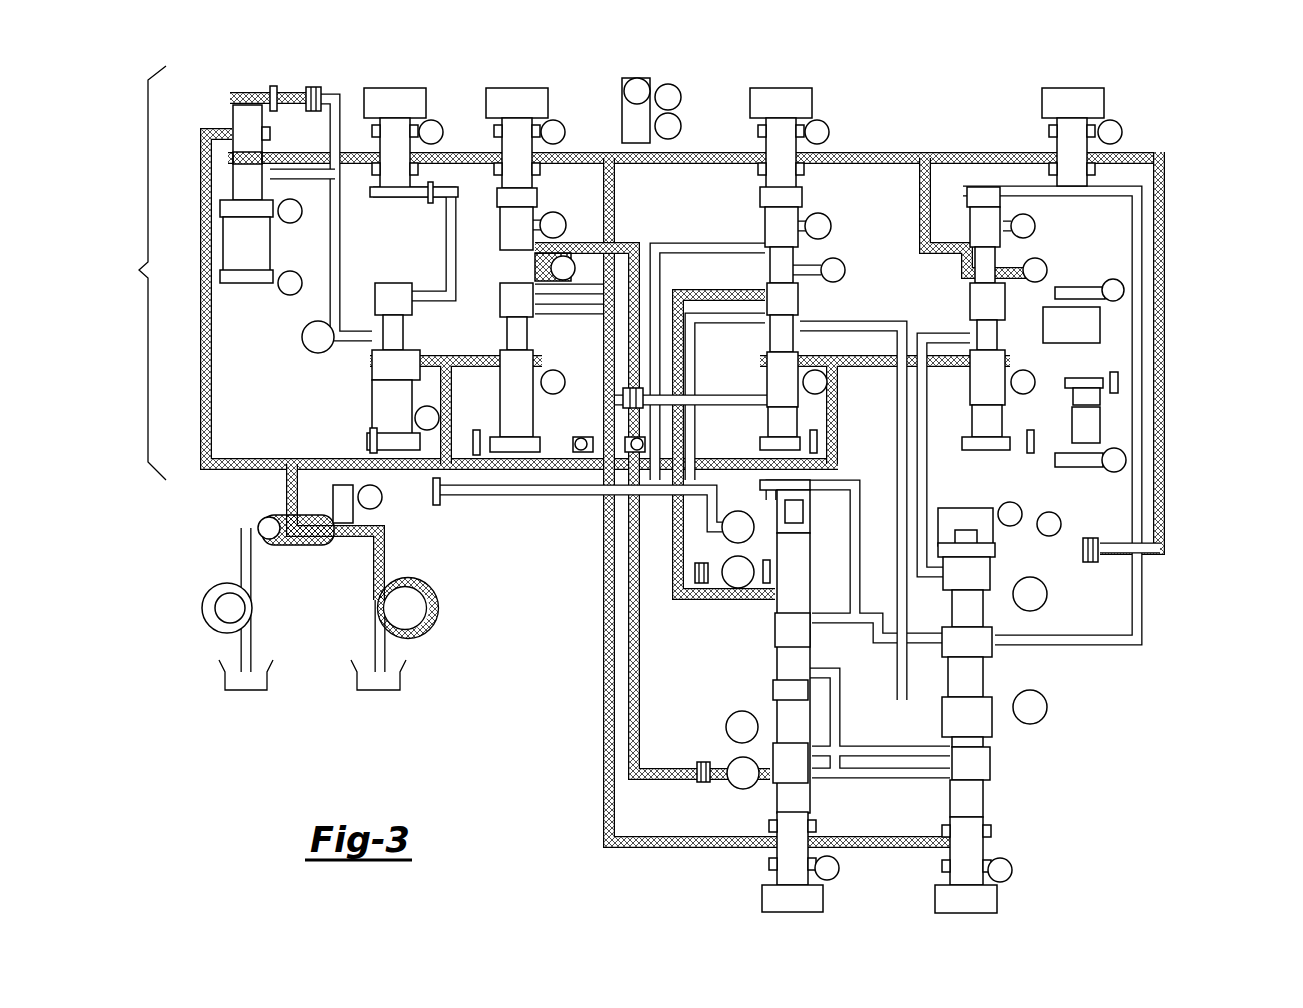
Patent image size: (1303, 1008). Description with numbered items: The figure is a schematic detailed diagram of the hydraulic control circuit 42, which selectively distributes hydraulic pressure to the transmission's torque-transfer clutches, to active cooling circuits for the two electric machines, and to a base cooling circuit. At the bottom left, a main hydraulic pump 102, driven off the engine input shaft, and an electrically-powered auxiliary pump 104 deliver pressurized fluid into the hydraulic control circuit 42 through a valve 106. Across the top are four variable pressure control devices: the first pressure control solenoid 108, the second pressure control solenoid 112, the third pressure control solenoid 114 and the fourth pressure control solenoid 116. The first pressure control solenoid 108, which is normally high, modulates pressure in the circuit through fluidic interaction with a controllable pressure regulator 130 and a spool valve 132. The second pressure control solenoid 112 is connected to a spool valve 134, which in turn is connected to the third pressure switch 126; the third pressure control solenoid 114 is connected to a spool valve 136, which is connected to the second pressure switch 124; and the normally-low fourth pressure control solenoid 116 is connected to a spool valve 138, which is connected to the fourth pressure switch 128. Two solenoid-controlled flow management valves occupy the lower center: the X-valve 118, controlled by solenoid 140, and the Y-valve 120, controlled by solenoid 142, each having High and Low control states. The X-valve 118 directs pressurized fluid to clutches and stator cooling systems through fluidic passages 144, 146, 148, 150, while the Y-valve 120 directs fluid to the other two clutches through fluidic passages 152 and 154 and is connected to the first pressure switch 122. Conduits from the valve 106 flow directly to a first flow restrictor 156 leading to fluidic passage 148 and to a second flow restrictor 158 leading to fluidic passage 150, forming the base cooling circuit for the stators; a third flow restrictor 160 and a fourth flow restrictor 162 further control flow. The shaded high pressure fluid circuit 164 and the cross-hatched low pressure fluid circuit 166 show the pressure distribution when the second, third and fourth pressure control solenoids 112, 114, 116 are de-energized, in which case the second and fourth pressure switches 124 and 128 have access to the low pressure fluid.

The hydraulic control circuit 42 is at (133, 273).
The main hydraulic pump 102 is at (430, 625).
The auxiliary pump 104 is at (203, 608).
The valve 106 is at (268, 527).
The first pressure control solenoid 108 is at (397, 88).
The second pressure control solenoid 112 is at (1072, 88).
The third pressure control solenoid 114 is at (781, 88).
The fourth pressure control solenoid 116 is at (517, 88).
The X-valve 118 is at (785, 700).
The Y-valve 120 is at (985, 772).
The first pressure switch 122 is at (1049, 522).
The second pressure switch 124 is at (1045, 265).
The third pressure switch 126 is at (845, 270).
The fourth pressure switch 128 is at (557, 282).
The controllable pressure regulator 130 is at (246, 274).
The spool valve 132 is at (403, 298).
The spool valve 134 is at (993, 300).
The spool valve 136 is at (770, 235).
The spool valve 138 is at (527, 228).
The solenoid 140 is at (762, 900).
The solenoid 142 is at (935, 900).
The fluidic passage 144 is at (742, 727).
The fluidic passage 146 is at (739, 525).
The fluidic passage 148 is at (738, 574).
The fluidic passage 150 is at (743, 790).
The fluidic passage 152 is at (1047, 707).
The fluidic passage 154 is at (1047, 594).
The first flow restrictor 156 is at (700, 585).
The second flow restrictor 158 is at (702, 762).
The third flow restrictor 160 is at (585, 437).
The fourth flow restrictor 162 is at (1090, 538).
The high pressure fluid circuit 164 is at (385, 560).
The low pressure fluid circuit 166 is at (1165, 273).